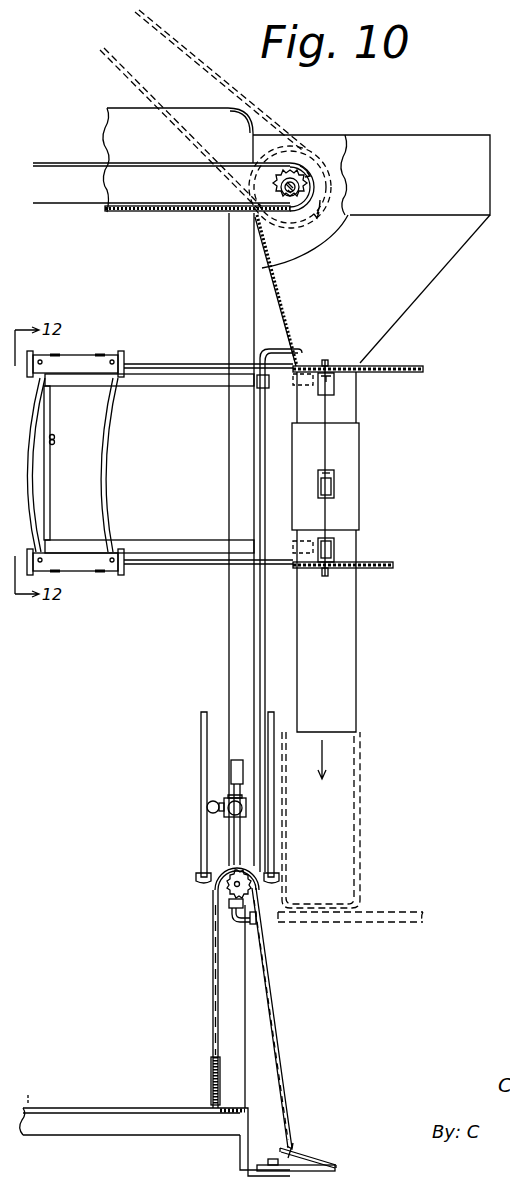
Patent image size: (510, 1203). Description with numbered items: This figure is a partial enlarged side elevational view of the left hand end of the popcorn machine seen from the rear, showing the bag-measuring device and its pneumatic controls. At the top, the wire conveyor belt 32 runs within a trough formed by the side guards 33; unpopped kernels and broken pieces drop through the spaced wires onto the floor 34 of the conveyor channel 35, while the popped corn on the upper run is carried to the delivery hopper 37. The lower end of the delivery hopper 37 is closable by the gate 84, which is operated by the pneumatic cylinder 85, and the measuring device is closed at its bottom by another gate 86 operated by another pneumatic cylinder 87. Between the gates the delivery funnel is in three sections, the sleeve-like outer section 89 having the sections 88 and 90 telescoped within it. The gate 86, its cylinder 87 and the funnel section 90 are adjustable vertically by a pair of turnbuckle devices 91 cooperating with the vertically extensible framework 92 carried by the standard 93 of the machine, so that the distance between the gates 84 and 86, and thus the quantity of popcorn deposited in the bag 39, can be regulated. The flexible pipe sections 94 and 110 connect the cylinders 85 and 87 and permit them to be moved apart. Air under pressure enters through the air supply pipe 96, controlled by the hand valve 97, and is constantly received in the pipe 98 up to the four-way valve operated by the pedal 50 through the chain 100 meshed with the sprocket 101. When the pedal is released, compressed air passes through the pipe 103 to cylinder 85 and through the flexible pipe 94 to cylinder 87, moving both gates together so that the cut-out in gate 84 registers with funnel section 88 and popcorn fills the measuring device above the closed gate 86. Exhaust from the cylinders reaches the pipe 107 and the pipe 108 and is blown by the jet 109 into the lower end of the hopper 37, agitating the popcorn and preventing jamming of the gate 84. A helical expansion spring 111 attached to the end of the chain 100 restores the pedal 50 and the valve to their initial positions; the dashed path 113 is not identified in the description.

The wire conveyor belt 32 is at (55, 154).
The side guards 33 is at (114, 108).
The floor of the conveyor channel 34 is at (142, 211).
The conveyor channel 35 is at (108, 190).
The delivery hopper 37 is at (453, 266).
The bag 39 is at (360, 790).
The pedal 50 is at (296, 1155).
The gate 84 is at (400, 366).
The pneumatic cylinder 85 is at (96, 353).
The gate 86 is at (378, 562).
The pneumatic cylinder 87 is at (90, 575).
The funnel section 88 is at (352, 402).
The funnel section 89 is at (352, 477).
The funnel section 90 is at (350, 599).
The turnbuckle devices 91 is at (341, 458).
The vertically extensible framework 92 is at (173, 537).
The standard 93 is at (228, 299).
The flexible pipe section 94 is at (30, 476).
The air supply pipe 96 is at (207, 807).
The hand valve 97 is at (227, 829).
The pipe 98 is at (240, 841).
The chain 100 is at (274, 990).
The sprocket 101 is at (228, 896).
The pipe 103 is at (205, 731).
The pipe 107 is at (274, 723).
The pipe 108 is at (262, 650).
The jet 109 is at (299, 347).
The flexible pipe 110 is at (112, 444).
The helical expansion spring 111 is at (211, 1073).
The chain path 113 is at (134, 80).